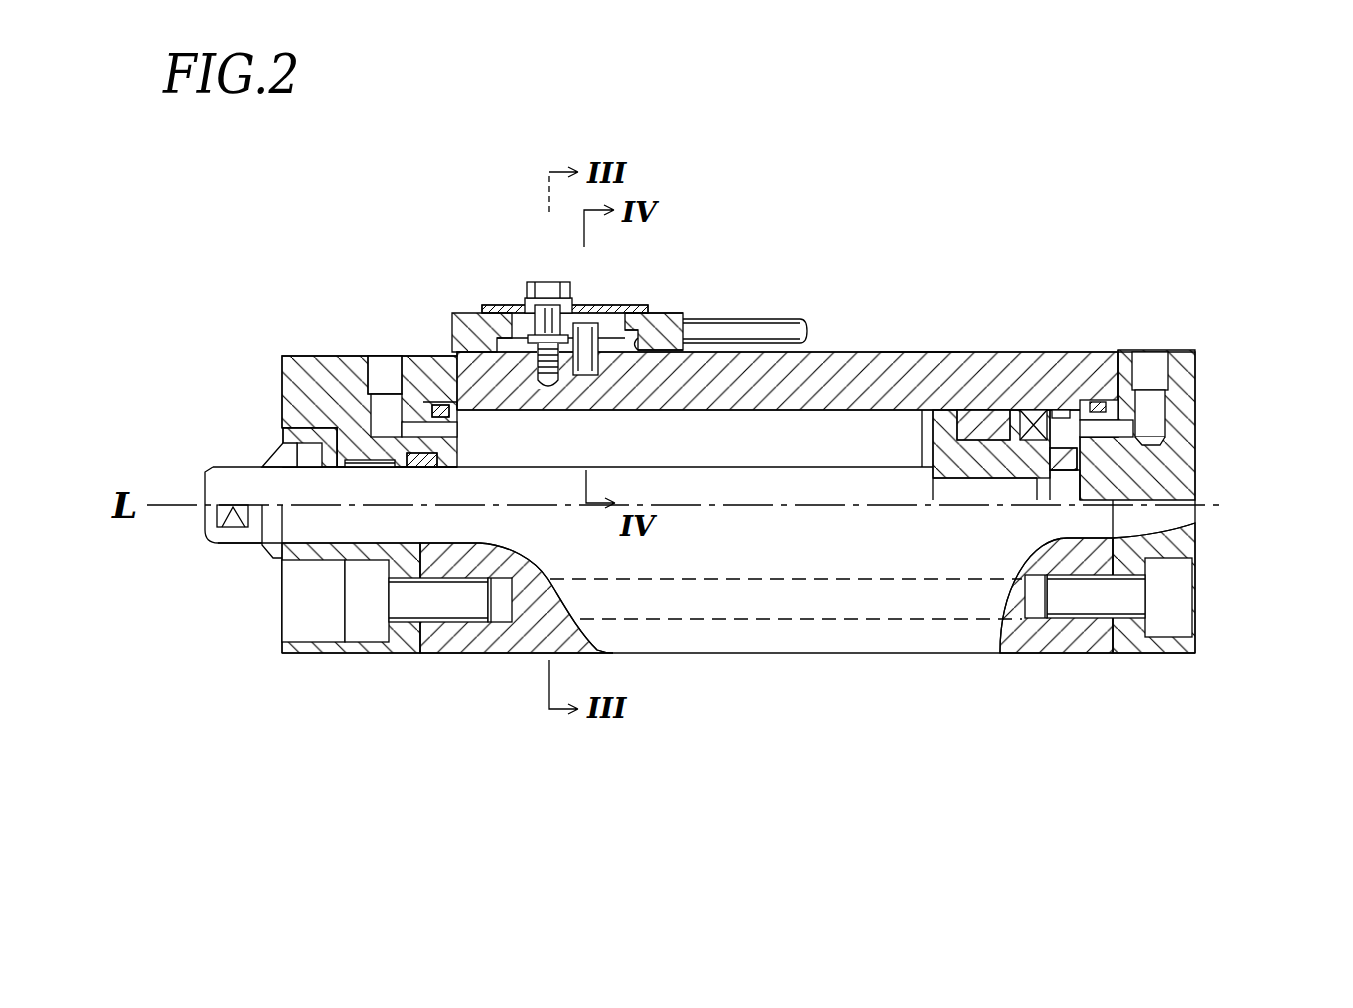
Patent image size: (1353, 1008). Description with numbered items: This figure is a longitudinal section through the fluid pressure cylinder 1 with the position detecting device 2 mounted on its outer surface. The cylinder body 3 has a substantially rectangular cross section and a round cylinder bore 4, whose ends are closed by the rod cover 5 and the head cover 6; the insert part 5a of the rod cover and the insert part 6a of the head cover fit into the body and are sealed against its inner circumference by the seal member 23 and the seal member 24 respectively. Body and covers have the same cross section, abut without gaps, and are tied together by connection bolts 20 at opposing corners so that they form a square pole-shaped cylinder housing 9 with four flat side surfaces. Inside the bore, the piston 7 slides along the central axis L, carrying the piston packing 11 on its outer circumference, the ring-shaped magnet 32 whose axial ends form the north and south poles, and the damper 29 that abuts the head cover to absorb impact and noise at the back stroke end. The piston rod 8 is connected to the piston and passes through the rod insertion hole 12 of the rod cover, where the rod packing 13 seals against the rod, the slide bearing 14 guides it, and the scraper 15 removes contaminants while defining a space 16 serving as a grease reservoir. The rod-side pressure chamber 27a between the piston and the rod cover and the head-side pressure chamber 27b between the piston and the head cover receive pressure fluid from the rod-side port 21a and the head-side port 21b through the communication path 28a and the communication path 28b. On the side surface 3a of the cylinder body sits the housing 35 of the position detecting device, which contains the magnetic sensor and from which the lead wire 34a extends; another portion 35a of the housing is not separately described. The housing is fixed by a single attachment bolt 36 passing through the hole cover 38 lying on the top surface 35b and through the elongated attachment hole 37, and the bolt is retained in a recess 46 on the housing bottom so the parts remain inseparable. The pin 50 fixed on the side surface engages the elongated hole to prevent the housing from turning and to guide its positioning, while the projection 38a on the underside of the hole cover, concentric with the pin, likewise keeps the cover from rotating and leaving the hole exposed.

The fluid pressure cylinder 1 is at (1039, 250).
The position detecting device 2 is at (507, 177).
The cylinder body 3 is at (908, 632).
The side surface 3a is at (915, 352).
The cylinder bore 4 is at (866, 423).
The rod cover 5 is at (305, 378).
The insert part 5a is at (460, 443).
The head cover 6 is at (1180, 365).
The insert part 6a is at (1127, 488).
The piston 7 is at (943, 430).
The piston rod 8 is at (233, 537).
The cylinder housing 9 is at (796, 689).
The piston packing 11 is at (1033, 425).
The rod insertion hole 12 is at (357, 470).
The rod packing 13 is at (423, 462).
The slide bearing 14 is at (377, 463).
The scraper 15 is at (277, 453).
The space 16 is at (281, 404).
The connection bolts 20 is at (367, 617).
The rod-side port 21a is at (368, 375).
The head-side port 21b is at (1157, 367).
The seal member 23 is at (432, 405).
The seal member 24 is at (1098, 403).
The rod-side pressure chamber 27a is at (813, 430).
The head-side pressure chamber 27b is at (1110, 432).
The communication path 28a is at (382, 377).
The communication path 28b is at (1117, 427).
The damper 29 is at (1073, 460).
The magnet 32 is at (983, 427).
The lead wire 34a is at (770, 327).
The housing 35 is at (660, 312).
The bottom surface of sensor holder 35a is at (660, 353).
The top surface 35b is at (672, 318).
The attachment bolt 36 is at (540, 284).
The elongated attachment hole 37 is at (515, 310).
The hole cover 38 is at (482, 305).
The projection 38a is at (585, 307).
The recess 46 is at (633, 331).
The pin 50 is at (583, 373).